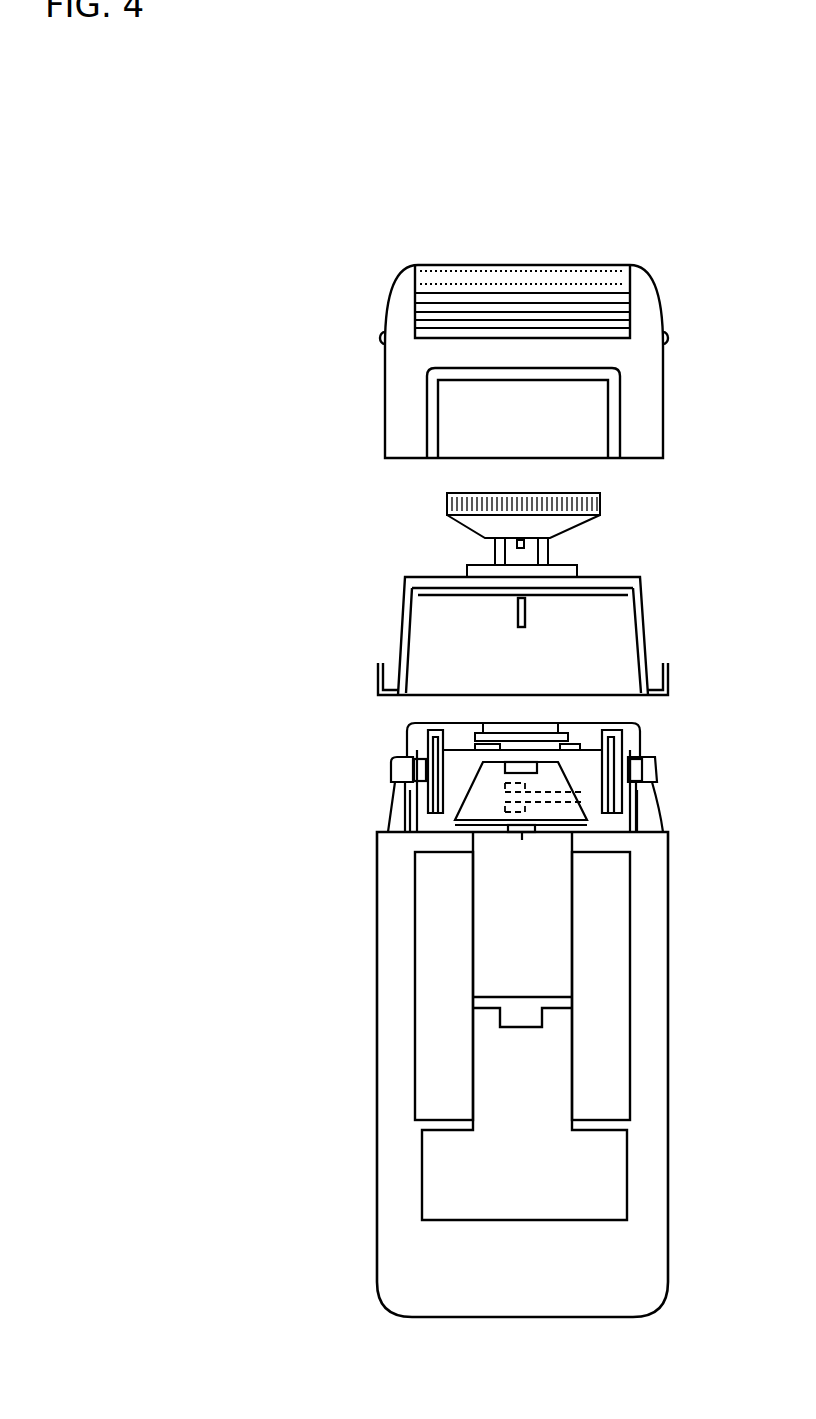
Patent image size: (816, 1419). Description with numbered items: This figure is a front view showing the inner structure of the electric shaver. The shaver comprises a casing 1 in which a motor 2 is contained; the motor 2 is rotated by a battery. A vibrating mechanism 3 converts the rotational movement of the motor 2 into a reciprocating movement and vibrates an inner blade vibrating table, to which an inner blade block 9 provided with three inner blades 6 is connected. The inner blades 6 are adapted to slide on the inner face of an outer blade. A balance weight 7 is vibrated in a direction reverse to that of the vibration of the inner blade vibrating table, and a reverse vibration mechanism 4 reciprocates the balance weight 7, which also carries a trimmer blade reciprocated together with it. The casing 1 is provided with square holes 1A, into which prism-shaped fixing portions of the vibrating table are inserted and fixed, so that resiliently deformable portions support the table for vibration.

The casing 1 is at (668, 1158).
The square holes 1A is at (418, 733).
The motor 2 is at (540, 948).
The vibrating mechanism 3 is at (500, 800).
The reverse vibration mechanism 4 is at (546, 772).
The inner blades 6 is at (600, 498).
The balance weight 7 is at (584, 745).
The inner blade block 9 is at (492, 546).